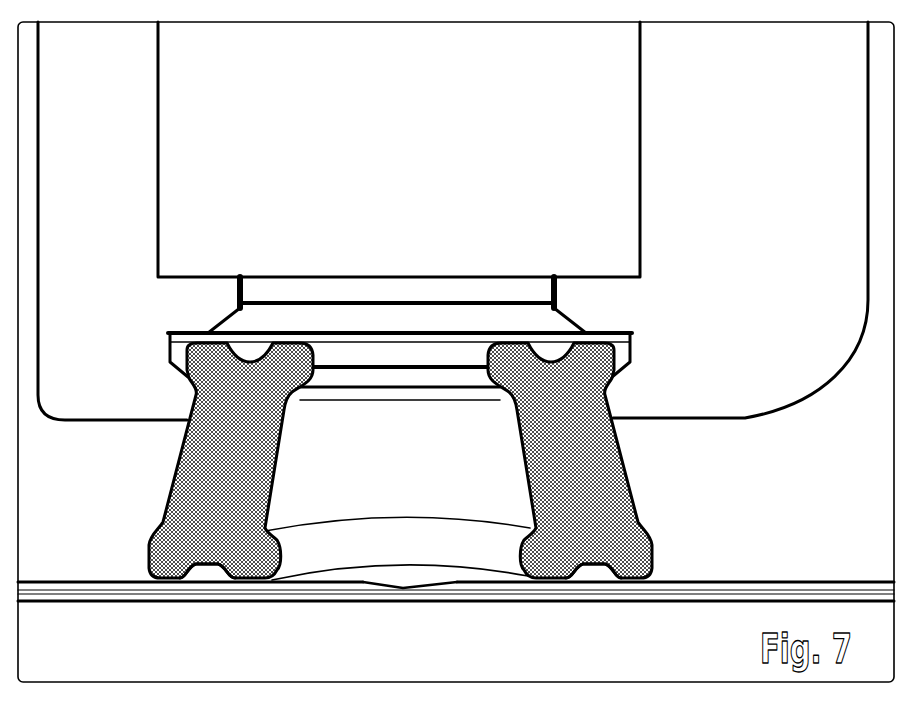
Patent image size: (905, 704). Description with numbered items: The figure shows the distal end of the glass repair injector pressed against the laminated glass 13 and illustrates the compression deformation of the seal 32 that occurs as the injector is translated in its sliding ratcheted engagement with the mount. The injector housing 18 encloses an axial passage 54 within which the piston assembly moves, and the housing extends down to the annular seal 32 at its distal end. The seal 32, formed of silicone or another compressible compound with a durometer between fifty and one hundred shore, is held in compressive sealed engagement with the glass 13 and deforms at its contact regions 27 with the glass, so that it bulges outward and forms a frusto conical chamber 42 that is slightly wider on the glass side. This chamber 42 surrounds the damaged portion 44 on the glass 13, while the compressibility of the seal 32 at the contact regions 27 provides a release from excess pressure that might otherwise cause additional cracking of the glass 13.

The glass 13 is at (498, 585).
The housing 18 is at (793, 403).
The foot of bumper 27 is at (217, 570).
The seal 32 is at (612, 488).
The frusto conical chamber 42 is at (400, 495).
The damaged portion 44 is at (398, 583).
The axial passage 54 is at (575, 203).